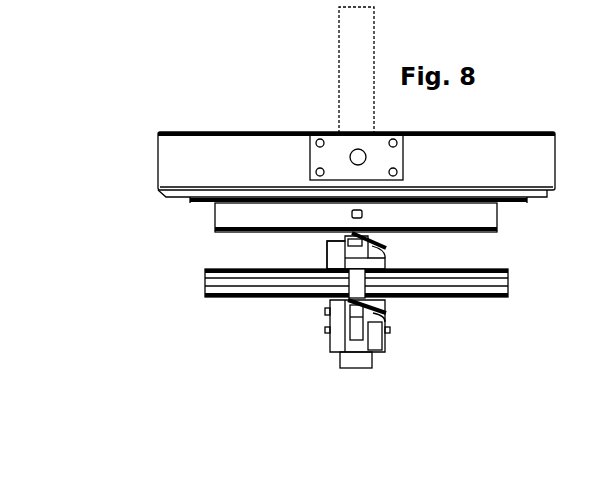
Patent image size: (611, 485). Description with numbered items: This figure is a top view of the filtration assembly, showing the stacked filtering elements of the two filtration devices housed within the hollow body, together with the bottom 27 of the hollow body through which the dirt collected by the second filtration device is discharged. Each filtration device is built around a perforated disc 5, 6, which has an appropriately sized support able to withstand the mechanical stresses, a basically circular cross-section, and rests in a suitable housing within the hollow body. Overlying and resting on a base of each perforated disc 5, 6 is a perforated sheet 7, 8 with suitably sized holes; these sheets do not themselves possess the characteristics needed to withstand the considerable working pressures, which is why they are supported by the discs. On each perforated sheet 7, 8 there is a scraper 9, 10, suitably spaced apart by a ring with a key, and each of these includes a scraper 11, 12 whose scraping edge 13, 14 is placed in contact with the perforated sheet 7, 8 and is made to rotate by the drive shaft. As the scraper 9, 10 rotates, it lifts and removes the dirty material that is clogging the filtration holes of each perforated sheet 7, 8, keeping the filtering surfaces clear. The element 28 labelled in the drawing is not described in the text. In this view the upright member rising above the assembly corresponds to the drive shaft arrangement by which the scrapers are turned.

The post 28 is at (352, 52).
The bottom 27 is at (265, 153).
The perforated disc 6 is at (215, 214).
The perforated sheet 8 is at (216, 232).
The scraping edge 14 is at (345, 232).
The scraper 12 is at (384, 257).
The scraper 10 is at (327, 258).
The perforated disc 5 is at (206, 286).
The perforated sheet 7 is at (208, 299).
The scraping edge 13 is at (330, 297).
The scraper 11 is at (385, 317).
The scraper 9 is at (338, 341).